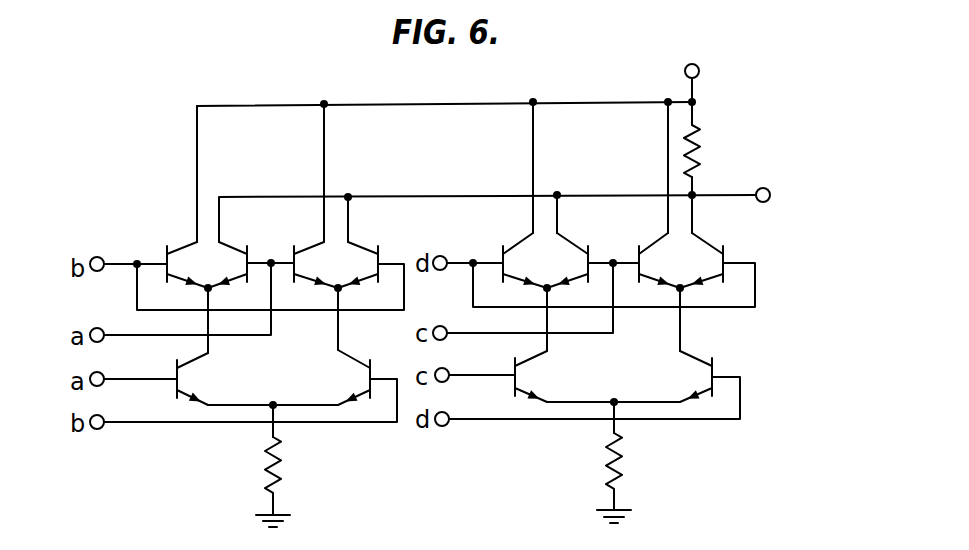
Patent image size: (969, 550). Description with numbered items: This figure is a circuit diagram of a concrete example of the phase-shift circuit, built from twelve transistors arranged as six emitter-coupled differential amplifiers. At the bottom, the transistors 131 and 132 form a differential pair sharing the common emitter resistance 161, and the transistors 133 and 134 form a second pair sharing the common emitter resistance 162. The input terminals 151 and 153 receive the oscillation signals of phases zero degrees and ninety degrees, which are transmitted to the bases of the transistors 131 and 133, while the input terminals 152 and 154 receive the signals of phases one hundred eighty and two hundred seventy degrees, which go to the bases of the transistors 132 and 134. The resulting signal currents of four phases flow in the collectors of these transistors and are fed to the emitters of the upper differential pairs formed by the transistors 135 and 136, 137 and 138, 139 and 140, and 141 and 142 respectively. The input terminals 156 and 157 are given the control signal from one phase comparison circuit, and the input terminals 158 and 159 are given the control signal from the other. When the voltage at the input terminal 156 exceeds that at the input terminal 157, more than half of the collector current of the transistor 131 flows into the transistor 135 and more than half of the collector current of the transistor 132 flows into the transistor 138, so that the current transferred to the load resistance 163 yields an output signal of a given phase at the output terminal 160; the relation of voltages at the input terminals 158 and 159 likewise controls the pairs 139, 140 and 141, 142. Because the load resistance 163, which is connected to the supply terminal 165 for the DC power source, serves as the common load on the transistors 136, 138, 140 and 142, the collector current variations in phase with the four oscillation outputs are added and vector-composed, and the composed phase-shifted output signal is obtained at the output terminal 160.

The transistor 131 is at (194, 363).
The transistor 132 is at (340, 364).
The transistor 133 is at (541, 357).
The transistor 134 is at (698, 390).
The transistor 135 is at (184, 243).
The transistor 136 is at (222, 240).
The transistor 137 is at (312, 243).
The transistor 138 is at (350, 241).
The transistor 139 is at (517, 243).
The transistor 140 is at (573, 240).
The transistor 141 is at (654, 240).
The transistor 142 is at (712, 242).
The input terminal 151 is at (104, 372).
The input terminal 152 is at (102, 428).
The input terminal 153 is at (448, 368).
The input terminal 154 is at (448, 426).
The input terminal 156 is at (96, 259).
The input terminal 157 is at (96, 327).
The input terminal 158 is at (441, 255).
The input terminal 159 is at (442, 325).
The output terminal 160 is at (777, 171).
The emitter resistance 161 is at (269, 451).
The emitter resistance 162 is at (609, 465).
The load resistance 163 is at (698, 134).
The supply terminal 165 is at (697, 66).